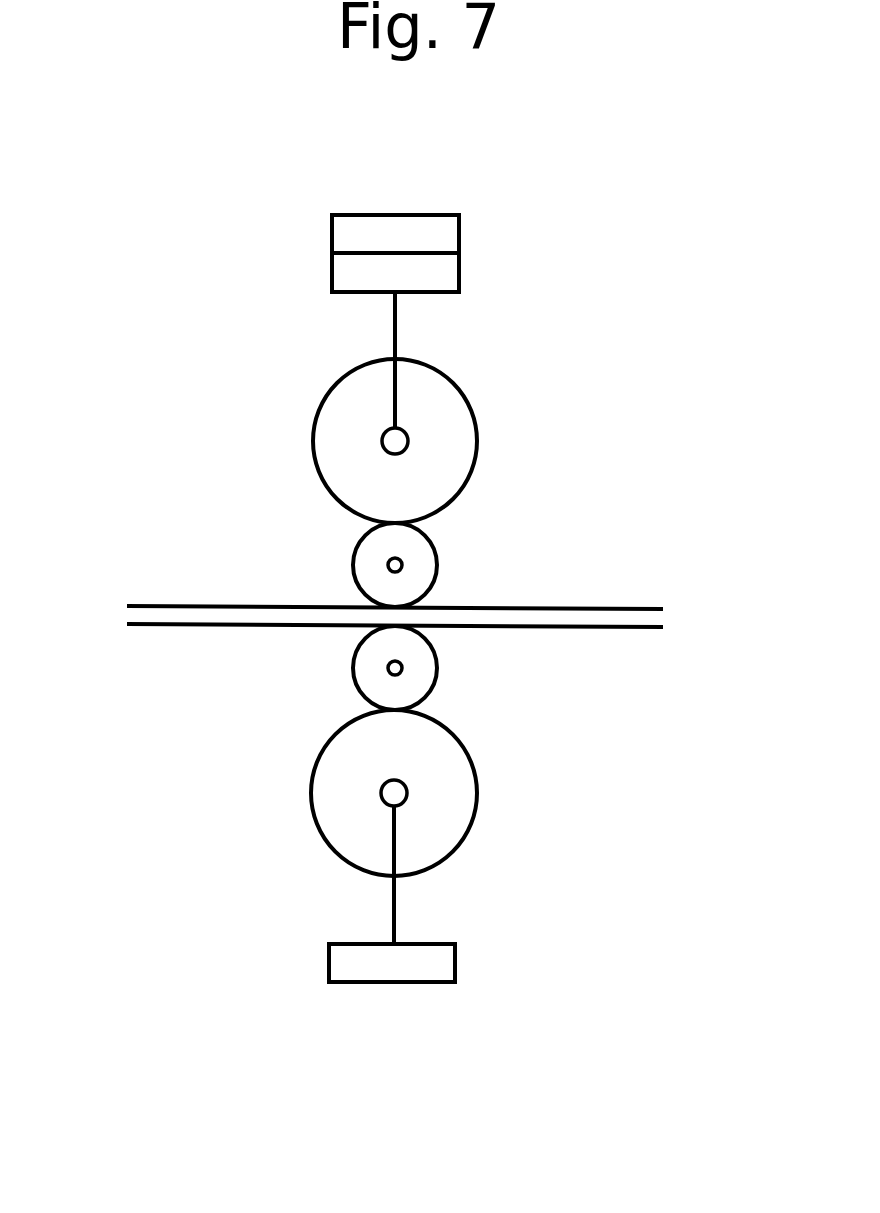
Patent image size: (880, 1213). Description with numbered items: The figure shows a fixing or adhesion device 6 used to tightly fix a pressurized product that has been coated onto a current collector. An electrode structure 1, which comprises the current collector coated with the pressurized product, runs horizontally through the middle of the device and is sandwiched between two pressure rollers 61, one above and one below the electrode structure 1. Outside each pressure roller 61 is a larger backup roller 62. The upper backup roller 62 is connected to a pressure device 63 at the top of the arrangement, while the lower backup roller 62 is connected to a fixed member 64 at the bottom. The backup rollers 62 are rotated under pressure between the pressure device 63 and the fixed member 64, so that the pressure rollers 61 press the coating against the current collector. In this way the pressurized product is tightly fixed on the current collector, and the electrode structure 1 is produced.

The electrode structure 1 is at (588, 627).
The fixing or adhesion device 6 is at (190, 405).
The pressure rollers 61 is at (457, 550).
The backup roller 62 is at (480, 440).
The pressure device 63 is at (459, 237).
The fixed member 64 is at (423, 983).